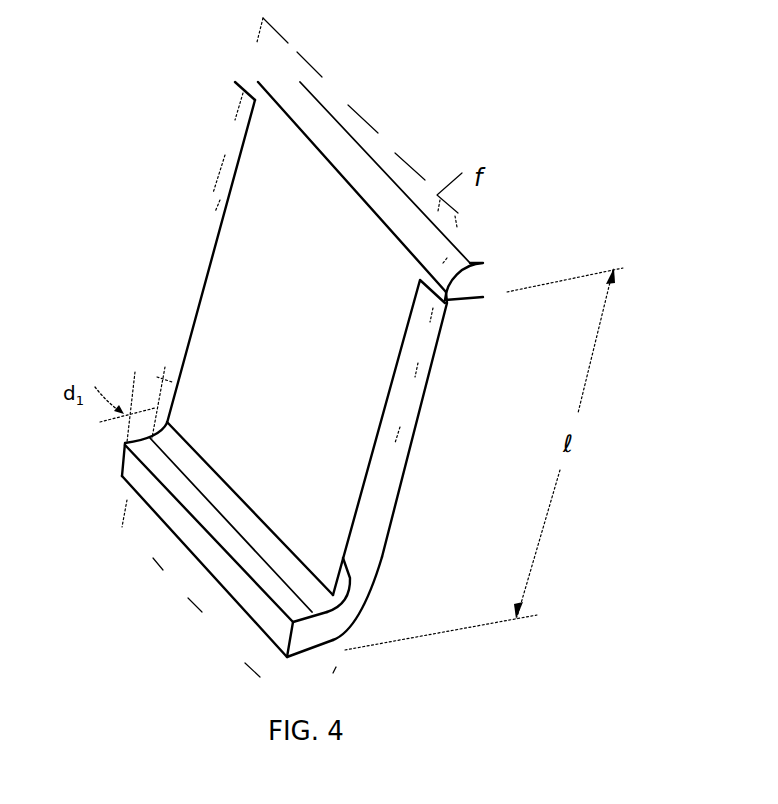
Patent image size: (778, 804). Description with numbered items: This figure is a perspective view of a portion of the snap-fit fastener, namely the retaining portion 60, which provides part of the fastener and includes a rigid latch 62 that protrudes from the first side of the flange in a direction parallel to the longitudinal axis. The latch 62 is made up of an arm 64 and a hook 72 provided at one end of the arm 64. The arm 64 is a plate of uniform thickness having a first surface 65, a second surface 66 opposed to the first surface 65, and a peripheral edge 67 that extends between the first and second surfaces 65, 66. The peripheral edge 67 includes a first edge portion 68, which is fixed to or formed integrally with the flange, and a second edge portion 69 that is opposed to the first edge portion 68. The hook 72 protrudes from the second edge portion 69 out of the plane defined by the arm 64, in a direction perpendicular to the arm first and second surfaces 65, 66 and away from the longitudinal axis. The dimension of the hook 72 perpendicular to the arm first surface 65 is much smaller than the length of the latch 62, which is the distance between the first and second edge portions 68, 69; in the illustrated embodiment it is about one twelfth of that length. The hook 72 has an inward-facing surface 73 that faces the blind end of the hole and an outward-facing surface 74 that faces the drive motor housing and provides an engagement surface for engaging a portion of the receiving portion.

The retaining portion 60 is at (146, 166).
The latch 62 is at (308, 339).
The arm 64 is at (225, 268).
The first surface 65 is at (203, 338).
The second surface 66 is at (432, 380).
The peripheral edge 67 is at (397, 453).
The first edge portion 68 is at (448, 310).
The second edge portion 69 is at (360, 612).
The hook 72 is at (233, 548).
The inward-facing surface 73 is at (307, 657).
The outward-facing surface 74 is at (277, 587).